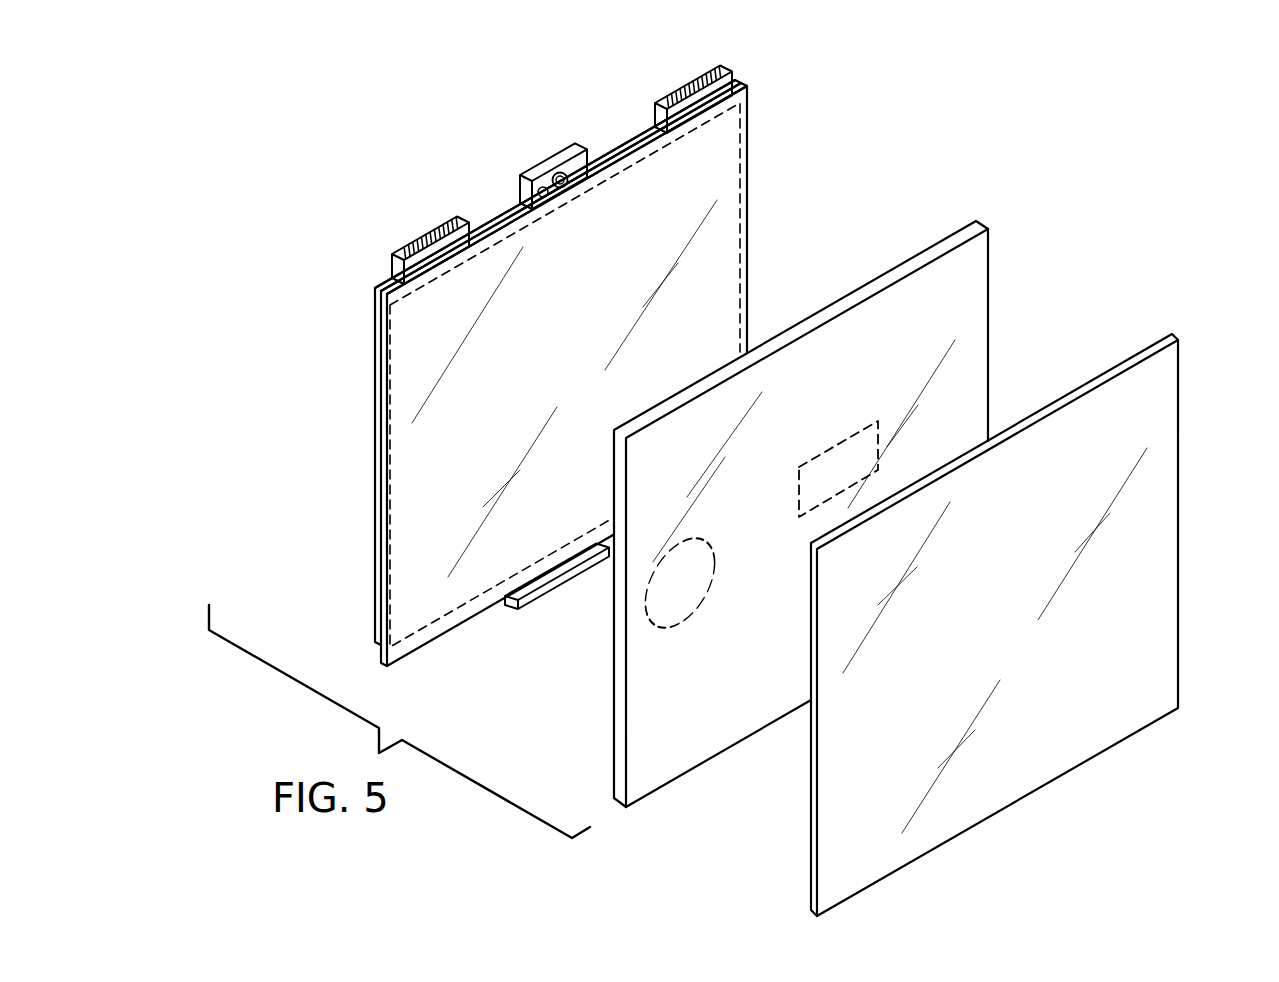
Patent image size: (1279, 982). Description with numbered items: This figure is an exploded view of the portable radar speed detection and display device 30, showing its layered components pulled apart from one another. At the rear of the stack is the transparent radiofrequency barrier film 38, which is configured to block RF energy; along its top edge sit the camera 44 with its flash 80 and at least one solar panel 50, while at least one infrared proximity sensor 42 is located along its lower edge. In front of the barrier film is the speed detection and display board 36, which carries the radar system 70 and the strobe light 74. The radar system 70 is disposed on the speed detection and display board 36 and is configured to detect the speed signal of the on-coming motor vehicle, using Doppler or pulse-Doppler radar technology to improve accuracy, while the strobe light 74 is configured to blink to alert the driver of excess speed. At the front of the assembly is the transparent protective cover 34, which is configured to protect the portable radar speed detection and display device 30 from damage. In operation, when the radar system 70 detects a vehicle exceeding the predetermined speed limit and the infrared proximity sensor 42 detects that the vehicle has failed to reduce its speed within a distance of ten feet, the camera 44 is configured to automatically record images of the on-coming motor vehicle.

The portable radar speed detection and display device 30 is at (390, 487).
The transparent protective cover 34 is at (1148, 412).
The speed detection and display board 36 is at (972, 313).
The transparent radiofrequency barrier film 38 is at (728, 174).
The infrared proximity sensor 42 is at (543, 590).
The camera 44 is at (597, 160).
The solar panel 50 is at (413, 244).
The radar system 70 is at (645, 606).
The strobe light 74 is at (838, 457).
The flash 80 is at (558, 174).